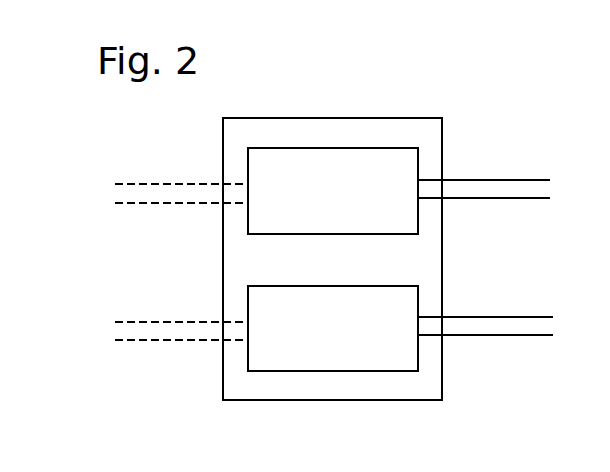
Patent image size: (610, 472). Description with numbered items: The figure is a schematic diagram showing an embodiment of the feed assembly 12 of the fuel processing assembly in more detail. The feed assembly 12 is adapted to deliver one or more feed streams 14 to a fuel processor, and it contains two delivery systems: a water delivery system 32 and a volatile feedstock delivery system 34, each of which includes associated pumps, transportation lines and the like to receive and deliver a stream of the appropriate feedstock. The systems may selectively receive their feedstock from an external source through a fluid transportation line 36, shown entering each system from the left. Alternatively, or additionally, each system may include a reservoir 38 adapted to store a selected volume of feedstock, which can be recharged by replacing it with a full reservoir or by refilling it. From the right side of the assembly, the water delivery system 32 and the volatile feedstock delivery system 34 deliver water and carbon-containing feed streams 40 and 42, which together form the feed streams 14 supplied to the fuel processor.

The feed assembly 12 is at (264, 117).
The feed streams 14 is at (470, 178).
The water delivery system 32 is at (332, 147).
The volatile feedstock delivery system 34 is at (318, 373).
The fluid transportation line 36 is at (163, 203).
The reservoir 38 is at (366, 147).
The water feed stream 40 is at (522, 180).
The carbon-containing feed stream 42 is at (522, 337).